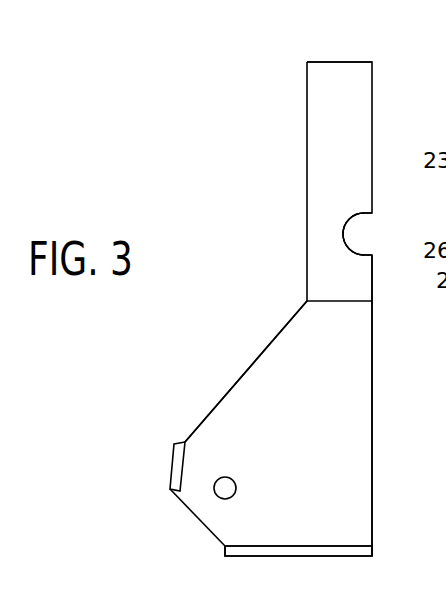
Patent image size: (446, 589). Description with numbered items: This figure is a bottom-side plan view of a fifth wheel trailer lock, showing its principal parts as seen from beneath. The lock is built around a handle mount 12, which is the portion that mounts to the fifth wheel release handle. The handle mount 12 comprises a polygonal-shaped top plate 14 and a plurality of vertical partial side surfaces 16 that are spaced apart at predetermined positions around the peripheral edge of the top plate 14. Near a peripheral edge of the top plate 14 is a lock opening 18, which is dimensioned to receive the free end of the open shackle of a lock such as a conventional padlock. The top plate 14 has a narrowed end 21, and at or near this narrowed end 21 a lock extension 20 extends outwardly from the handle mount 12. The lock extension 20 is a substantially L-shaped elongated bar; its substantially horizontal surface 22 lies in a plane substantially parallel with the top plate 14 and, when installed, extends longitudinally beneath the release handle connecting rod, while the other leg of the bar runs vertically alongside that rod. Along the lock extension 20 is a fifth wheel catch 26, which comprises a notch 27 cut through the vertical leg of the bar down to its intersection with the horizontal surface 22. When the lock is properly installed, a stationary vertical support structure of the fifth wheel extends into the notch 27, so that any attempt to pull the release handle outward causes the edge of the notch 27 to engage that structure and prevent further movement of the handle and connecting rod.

The handle mount 12 is at (212, 398).
The top plate 14 is at (348, 382).
The vertical partial side surfaces 16 is at (178, 462).
The lock opening 18 is at (225, 488).
The lock extension 20 is at (372, 83).
The narrowed end 21 is at (305, 302).
The substantially horizontal surface 22 is at (364, 143).
The fifth wheel catch 26 is at (358, 237).
The notch 27 is at (345, 236).